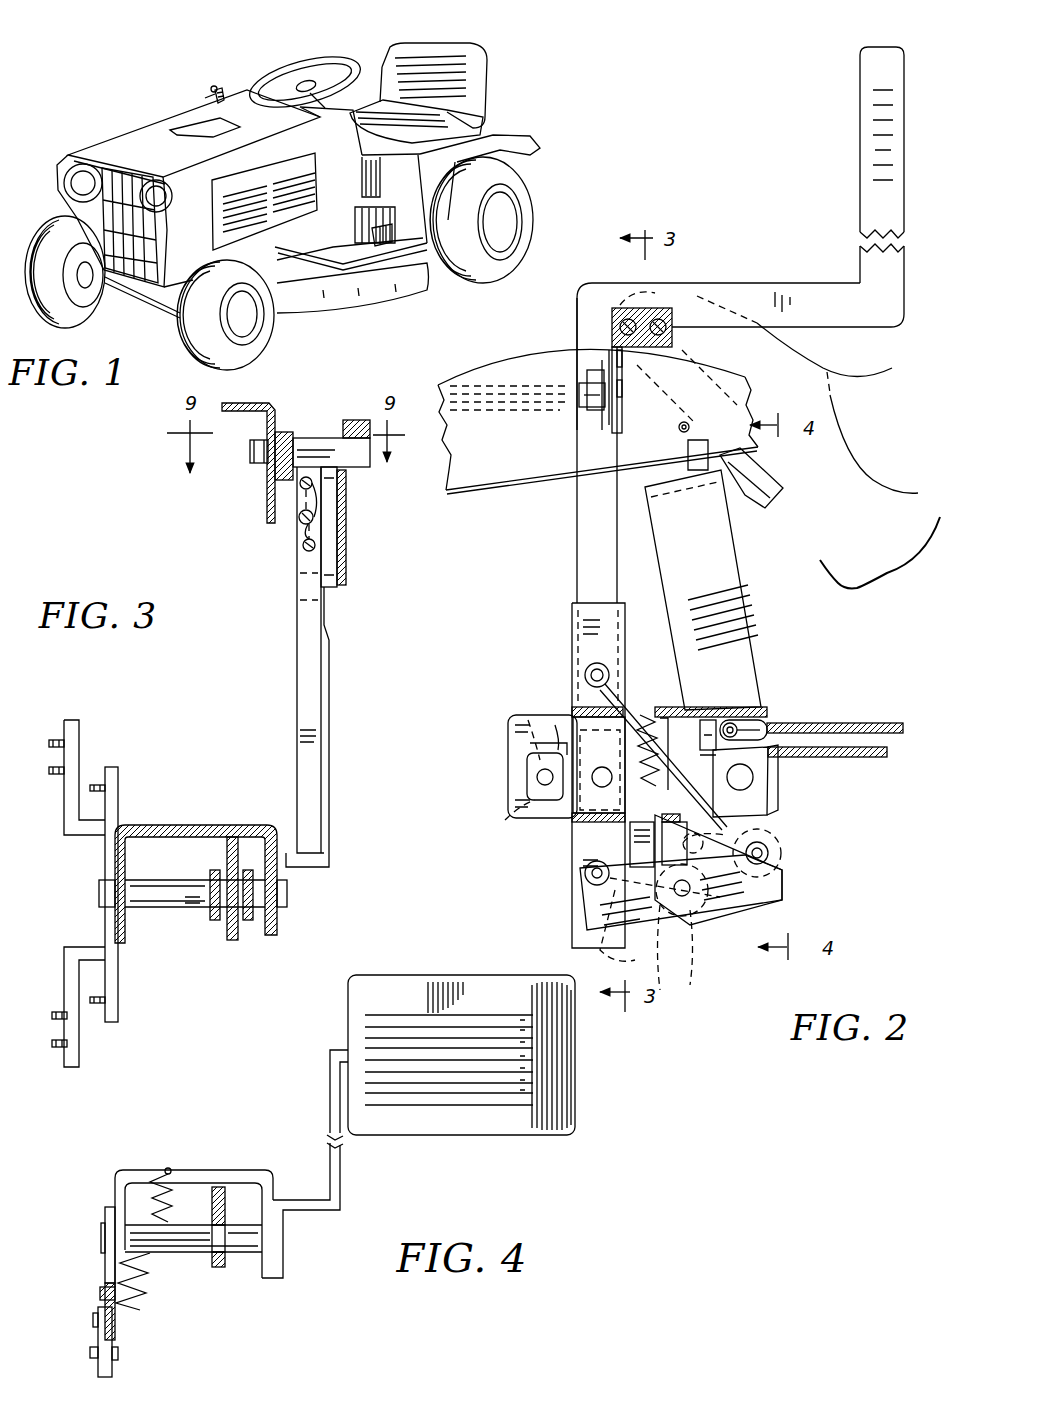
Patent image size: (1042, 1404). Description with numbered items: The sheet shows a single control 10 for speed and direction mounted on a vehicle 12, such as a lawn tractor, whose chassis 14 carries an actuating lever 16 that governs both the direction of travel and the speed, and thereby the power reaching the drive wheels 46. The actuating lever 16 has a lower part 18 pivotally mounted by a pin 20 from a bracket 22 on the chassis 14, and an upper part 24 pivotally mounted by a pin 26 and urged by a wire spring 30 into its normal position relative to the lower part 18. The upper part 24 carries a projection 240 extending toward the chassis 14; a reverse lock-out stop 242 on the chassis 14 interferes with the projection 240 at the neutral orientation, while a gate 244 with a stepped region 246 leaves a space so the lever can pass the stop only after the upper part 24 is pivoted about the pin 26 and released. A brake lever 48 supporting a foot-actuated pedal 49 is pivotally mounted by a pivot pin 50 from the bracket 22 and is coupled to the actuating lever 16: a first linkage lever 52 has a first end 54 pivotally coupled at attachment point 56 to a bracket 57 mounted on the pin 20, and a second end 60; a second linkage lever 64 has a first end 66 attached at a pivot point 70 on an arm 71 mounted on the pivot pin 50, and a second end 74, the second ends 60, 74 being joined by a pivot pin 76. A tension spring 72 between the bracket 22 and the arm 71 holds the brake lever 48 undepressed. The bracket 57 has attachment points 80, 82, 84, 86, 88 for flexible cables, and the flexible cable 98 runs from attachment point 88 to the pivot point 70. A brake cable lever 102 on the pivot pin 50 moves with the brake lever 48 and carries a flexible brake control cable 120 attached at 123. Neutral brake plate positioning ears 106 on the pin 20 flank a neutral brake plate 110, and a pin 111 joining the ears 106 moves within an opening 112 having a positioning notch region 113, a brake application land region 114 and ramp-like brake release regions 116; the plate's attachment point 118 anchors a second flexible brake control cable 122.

In FIG. 1, the single control 10 is at (205, 98).
In FIG. 1, the vehicle 12 is at (155, 115).
In FIG. 1, the chassis 14 is at (380, 235).
In FIG. 3, the chassis 14 is at (259, 412).
In FIG. 1, the actuating lever 16 is at (221, 88).
In FIG. 3, the actuating lever 16 is at (361, 617).
In FIG. 2, the actuating lever 16 is at (845, 140).
In FIG. 3, the lower part 18 is at (311, 710).
In FIG. 2, the lower part 18 is at (580, 529).
In FIG. 3, the pin 20 is at (143, 897).
In FIG. 2, the pin 20 is at (568, 797).
In FIG. 3, the bracket 22 is at (160, 827).
In FIG. 2, the bracket 22 is at (747, 708).
In FIG. 4, the bracket 22 is at (253, 1170).
In FIG. 3, the upper part 24 is at (355, 420).
In FIG. 2, the upper part 24 is at (802, 298).
In FIG. 3, the pin 26 is at (294, 522).
In FIG. 2, the pin 26 is at (579, 390).
In FIG. 3, the wire spring 30 is at (342, 528).
In FIG. 2, the wire spring 30 is at (622, 407).
In FIG. 1, the drive wheels 46 is at (520, 213).
In FIG. 2, the brake lever 48 is at (685, 568).
In FIG. 4, the brake lever 48 is at (335, 1160).
In FIG. 2, the foot-actuated pedal 49 is at (757, 490).
In FIG. 4, the foot-actuated pedal 49 is at (352, 1012).
In FIG. 2, the pivot pin 50 is at (752, 780).
In FIG. 4, the pivot pin 50 is at (250, 1243).
In FIG. 2, the first linkage lever 52 is at (592, 892).
In FIG. 4, the first linkage lever 52 is at (117, 1370).
In FIG. 2, the first end 54 is at (577, 882).
In FIG. 3, the attachment point 56 is at (95, 1007).
In FIG. 2, the attachment point 56 is at (590, 872).
In FIG. 3, the bracket 57 is at (62, 902).
In FIG. 2, the bracket 57 is at (560, 668).
In FIG. 2, the second end 60 is at (687, 930).
In FIG. 2, the second linkage lever 64 is at (757, 893).
In FIG. 4, the second linkage lever 64 is at (93, 1337).
In FIG. 2, the first end 66 is at (770, 850).
In FIG. 2, the pivot point 70 is at (780, 887).
In FIG. 4, the pivot point 70 is at (120, 1323).
In FIG. 2, the arm 71 is at (763, 820).
In FIG. 4, the arm 71 is at (105, 1217).
In FIG. 2, the tension spring 72 is at (645, 787).
In FIG. 4, the tension spring 72 is at (153, 1180).
In FIG. 2, the second end 74 is at (660, 961).
In FIG. 2, the pivot pin 76 is at (690, 976).
In FIG. 4, the pivot pin 76 is at (90, 1352).
In FIG. 3, the attachment point 80 is at (53, 742).
In FIG. 3, the attachment point 82 is at (50, 775).
In FIG. 3, the attachment point 84 is at (52, 1013).
In FIG. 3, the attachment point 86 is at (52, 1043).
In FIG. 3, the attachment point 88 is at (93, 783).
In FIG. 2, the attachment point 88 is at (593, 670).
In FIG. 2, the flexible cable 98 is at (637, 707).
In FIG. 2, the brake cable lever 102 is at (720, 713).
In FIG. 4, the brake cable lever 102 is at (215, 1257).
In FIG. 3, the neutral brake plate positioning ears 106 is at (247, 920).
In FIG. 2, the neutral brake plate positioning ears 106 is at (560, 810).
In FIG. 3, the neutral brake plate 110 is at (233, 837).
In FIG. 2, the neutral brake plate 110 is at (508, 721).
In FIG. 3, the pin 111 is at (190, 907).
In FIG. 2, the pin 111 is at (545, 810).
In FIG. 2, the opening 112 is at (558, 717).
In FIG. 3, the positioning notch region 113 is at (207, 887).
In FIG. 2, the positioning notch region 113 is at (540, 717).
In FIG. 2, the brake application land region 114 is at (500, 827).
In FIG. 2, the brake release region 116 is at (535, 733).
In FIG. 2, the attachment point 118 is at (642, 707).
In FIG. 2, the flexible brake control cable 120 is at (885, 727).
In FIG. 2, the flexible brake control cable 122 is at (857, 760).
In FIG. 2, the attachment 123 is at (767, 727).
In FIG. 3, the projection 240 is at (300, 446).
In FIG. 2, the projection 240 is at (592, 325).
In FIG. 3, the reverse lock-out stop 242 is at (287, 435).
In FIG. 2, the reverse lock-out stop 242 is at (657, 307).
In FIG. 2, the gate 244 is at (492, 369).
In FIG. 3, the stepped region 246 is at (332, 557).
In FIG. 2, the stepped region 246 is at (690, 359).